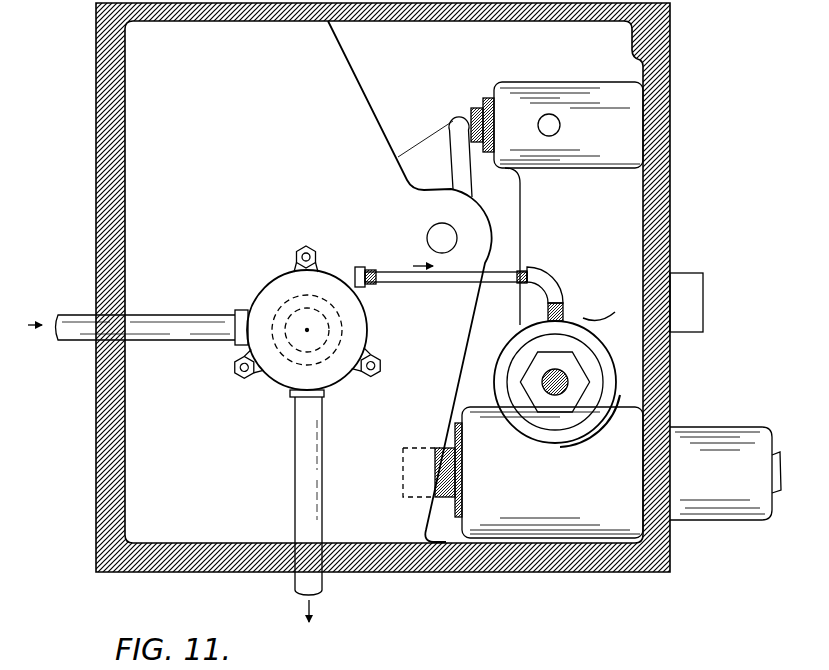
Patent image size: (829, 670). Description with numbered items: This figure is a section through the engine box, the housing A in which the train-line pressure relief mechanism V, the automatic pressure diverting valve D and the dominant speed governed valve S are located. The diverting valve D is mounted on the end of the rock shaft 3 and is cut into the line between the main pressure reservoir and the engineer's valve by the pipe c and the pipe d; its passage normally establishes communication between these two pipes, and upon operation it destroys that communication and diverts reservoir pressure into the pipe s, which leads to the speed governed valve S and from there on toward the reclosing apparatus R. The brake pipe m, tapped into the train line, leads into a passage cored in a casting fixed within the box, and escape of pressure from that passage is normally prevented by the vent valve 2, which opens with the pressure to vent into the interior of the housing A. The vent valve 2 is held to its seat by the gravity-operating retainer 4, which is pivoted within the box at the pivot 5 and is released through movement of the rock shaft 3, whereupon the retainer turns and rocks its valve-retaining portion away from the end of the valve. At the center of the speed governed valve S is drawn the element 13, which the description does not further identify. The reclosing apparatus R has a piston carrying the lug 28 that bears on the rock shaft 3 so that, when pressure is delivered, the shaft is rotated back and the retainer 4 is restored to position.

The housing A is at (108, 437).
The pipe C is at (75, 315).
The automatic pressure diverting valve D is at (307, 321).
The rock shaft 3 is at (304, 325).
The pipe d is at (310, 477).
The pipe s is at (446, 269).
The gravity-operating retainer 4 is at (410, 281).
The pivot 5 is at (441, 237).
The vent valve 2 is at (472, 108).
The train-line pressure relief mechanism V is at (580, 186).
The lug 28 is at (420, 450).
The dominant speed governed valve S is at (602, 357).
The pin 13 is at (559, 371).
The brake pipe m is at (700, 299).
The reclosing apparatus R is at (728, 511).